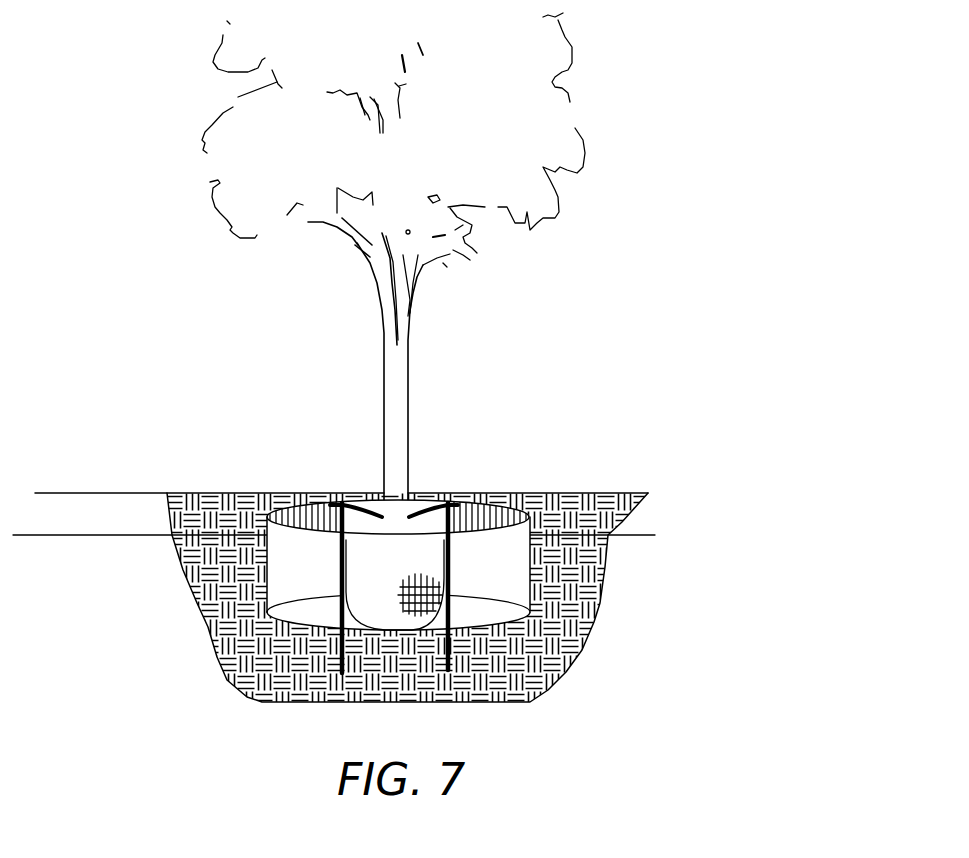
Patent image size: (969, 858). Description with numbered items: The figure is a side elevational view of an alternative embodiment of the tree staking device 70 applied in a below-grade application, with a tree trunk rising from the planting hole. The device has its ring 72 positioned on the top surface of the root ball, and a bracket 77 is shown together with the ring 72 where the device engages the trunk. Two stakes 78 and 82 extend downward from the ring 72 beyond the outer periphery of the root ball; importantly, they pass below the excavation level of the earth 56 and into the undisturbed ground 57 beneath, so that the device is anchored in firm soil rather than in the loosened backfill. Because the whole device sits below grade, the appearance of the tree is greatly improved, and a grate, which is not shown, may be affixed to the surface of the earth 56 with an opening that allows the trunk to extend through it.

The earth 56 is at (138, 496).
The undisturbed ground 57 is at (256, 659).
The tree staking device 70 is at (444, 518).
The ring 72 is at (427, 495).
The bracket 77 is at (355, 494).
The stake 78 is at (338, 565).
The stake 82 is at (452, 565).